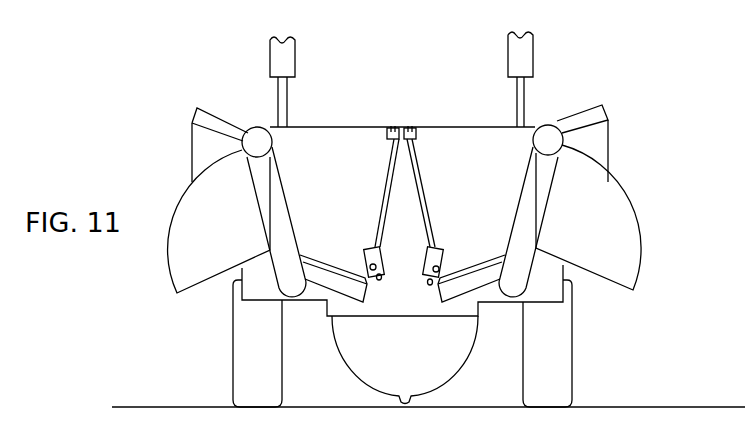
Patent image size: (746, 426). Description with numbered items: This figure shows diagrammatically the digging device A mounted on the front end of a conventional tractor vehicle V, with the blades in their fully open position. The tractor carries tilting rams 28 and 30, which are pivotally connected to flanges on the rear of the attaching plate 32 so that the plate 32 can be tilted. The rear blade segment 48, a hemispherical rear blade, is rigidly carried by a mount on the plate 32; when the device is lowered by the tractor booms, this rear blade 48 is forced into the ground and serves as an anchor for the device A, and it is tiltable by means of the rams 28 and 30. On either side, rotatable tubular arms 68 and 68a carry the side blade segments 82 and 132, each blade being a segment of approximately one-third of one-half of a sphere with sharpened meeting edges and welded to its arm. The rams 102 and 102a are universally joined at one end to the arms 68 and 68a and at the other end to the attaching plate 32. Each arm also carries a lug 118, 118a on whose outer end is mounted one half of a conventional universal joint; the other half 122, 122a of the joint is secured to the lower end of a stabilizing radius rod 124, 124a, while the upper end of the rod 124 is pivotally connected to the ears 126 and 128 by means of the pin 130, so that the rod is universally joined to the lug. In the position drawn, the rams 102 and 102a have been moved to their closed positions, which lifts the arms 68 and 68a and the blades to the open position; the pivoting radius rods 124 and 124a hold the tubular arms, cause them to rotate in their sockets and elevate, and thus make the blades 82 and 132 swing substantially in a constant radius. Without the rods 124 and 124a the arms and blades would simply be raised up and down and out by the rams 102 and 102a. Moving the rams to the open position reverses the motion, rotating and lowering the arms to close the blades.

The tilting ram 28 is at (290, 63).
The tilting ram 30 is at (525, 55).
The attaching plate 32 is at (327, 304).
The rear blade segment 48 is at (440, 377).
The tubular arm 68 is at (277, 183).
The tubular arm 68a is at (532, 176).
The side blade segment 82 is at (182, 265).
The ram 102 is at (218, 123).
The ram 102a is at (604, 108).
The lug 118 is at (310, 270).
The support beam 118a is at (481, 277).
The universal joint half 122 is at (373, 253).
The clevis 122a is at (441, 252).
The stabilizing radius rod 124 is at (387, 181).
The stabilizing radius rod 124a is at (423, 202).
The ear 126 is at (392, 127).
The ear 128 is at (408, 127).
The pin 130 is at (387, 133).
The side blade segment 132 is at (628, 247).
The device A is at (627, 162).
The tractor vehicle V is at (577, 320).